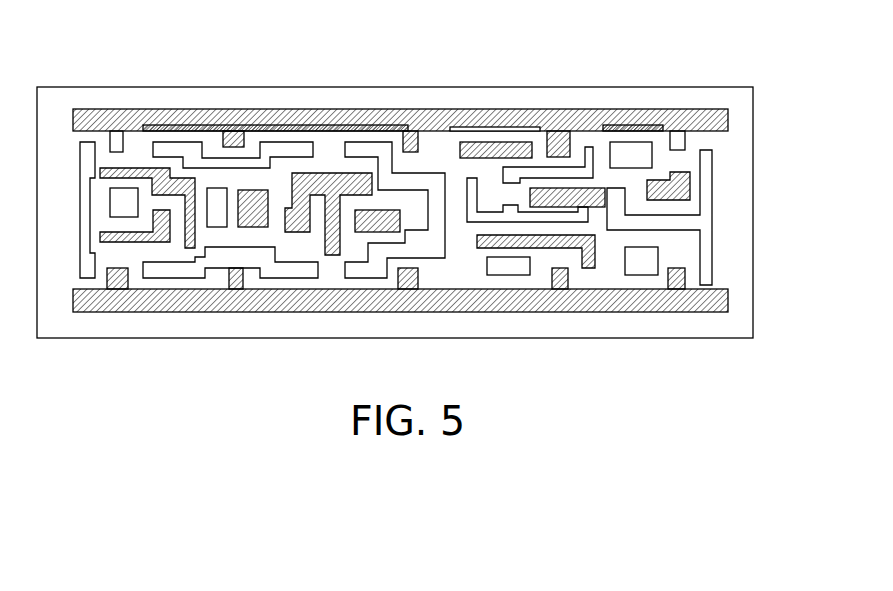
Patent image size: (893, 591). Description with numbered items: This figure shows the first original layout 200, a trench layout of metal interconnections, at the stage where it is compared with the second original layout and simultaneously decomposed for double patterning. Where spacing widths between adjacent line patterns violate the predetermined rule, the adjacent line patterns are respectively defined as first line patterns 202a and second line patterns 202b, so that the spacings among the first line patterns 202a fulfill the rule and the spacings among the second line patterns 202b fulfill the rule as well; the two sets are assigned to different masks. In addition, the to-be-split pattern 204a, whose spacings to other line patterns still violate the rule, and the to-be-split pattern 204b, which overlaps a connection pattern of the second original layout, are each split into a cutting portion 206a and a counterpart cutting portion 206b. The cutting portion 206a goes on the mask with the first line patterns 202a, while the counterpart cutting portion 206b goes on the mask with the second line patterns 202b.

The first original layout 200 is at (753, 97).
The first line patterns 202a is at (717, 109).
The second line patterns 202b is at (500, 275).
The to-be-split pattern 204a is at (692, 62).
The to-be-split pattern 204b is at (188, 62).
The cutting portion 206a is at (128, 167).
The counterpart cutting portion 206b is at (89, 145).